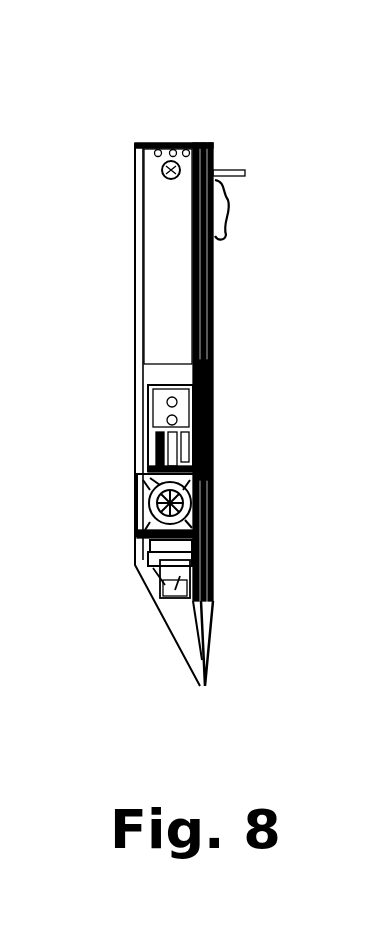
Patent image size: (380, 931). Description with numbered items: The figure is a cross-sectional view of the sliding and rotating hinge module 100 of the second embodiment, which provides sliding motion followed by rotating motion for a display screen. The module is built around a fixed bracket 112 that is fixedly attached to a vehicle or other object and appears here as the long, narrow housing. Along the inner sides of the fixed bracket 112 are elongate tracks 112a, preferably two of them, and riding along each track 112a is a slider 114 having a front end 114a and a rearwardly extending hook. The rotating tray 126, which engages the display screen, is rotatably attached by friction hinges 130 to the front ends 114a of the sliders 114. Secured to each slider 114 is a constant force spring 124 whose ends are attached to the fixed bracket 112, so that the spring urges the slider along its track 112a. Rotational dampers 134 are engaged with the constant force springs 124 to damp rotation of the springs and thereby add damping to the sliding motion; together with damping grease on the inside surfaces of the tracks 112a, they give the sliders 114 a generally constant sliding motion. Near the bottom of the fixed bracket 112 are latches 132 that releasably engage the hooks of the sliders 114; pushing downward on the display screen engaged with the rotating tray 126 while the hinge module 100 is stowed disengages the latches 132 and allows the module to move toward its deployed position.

The sliding and rotating hinge module 100 is at (247, 93).
The fixed bracket 112 is at (182, 631).
The elongate track 112a is at (160, 232).
The rotating tray 126 is at (195, 141).
The slider 114 is at (209, 416).
The front end 114a is at (209, 383).
The friction hinge 130 is at (155, 405).
The constant force spring 124 is at (211, 486).
The rotational damper 134 is at (213, 509).
The latch 132 is at (212, 588).